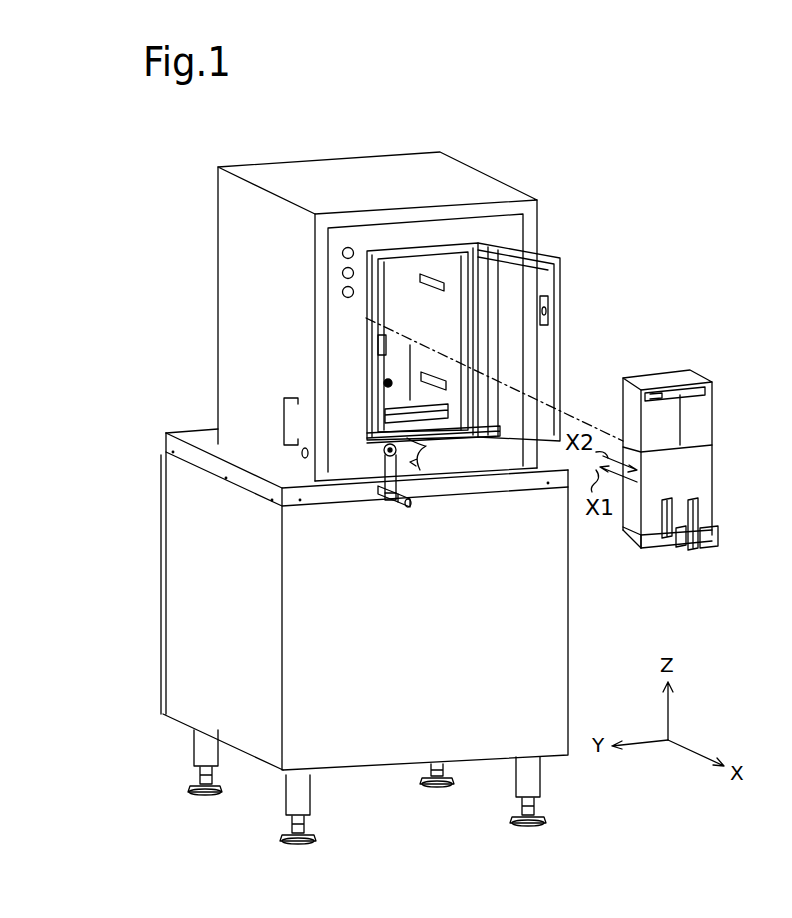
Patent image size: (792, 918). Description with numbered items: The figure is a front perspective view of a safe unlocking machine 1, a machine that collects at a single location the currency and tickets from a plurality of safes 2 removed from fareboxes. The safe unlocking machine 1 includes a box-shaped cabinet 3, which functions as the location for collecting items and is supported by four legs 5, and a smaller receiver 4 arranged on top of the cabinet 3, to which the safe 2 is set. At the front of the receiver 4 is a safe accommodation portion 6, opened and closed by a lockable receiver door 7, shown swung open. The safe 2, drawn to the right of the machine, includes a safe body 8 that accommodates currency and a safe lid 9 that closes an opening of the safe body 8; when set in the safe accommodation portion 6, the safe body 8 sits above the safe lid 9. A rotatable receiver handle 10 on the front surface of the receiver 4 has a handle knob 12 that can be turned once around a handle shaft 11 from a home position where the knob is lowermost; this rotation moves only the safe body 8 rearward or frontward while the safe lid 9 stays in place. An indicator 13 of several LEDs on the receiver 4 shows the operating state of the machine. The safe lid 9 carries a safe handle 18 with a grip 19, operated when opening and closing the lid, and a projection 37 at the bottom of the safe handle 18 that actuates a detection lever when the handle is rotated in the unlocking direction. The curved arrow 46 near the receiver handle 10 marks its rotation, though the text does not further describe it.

The safe unlocking machine 1 is at (207, 123).
The safe 2 is at (645, 374).
The cabinet 3 is at (161, 443).
The receiver 4 is at (218, 202).
The legs 5 is at (193, 744).
The safe accommodation portion 6 is at (404, 270).
The receiver door 7 is at (562, 272).
The safe body 8 is at (676, 380).
The safe lid 9 is at (718, 537).
The receiver handle 10 is at (378, 494).
The handle shaft 11 is at (382, 455).
The handle knob 12 is at (396, 502).
The indicator 13 is at (331, 278).
The safe handle 18 is at (683, 551).
The grip 19 is at (703, 545).
The projection 37 is at (669, 548).
The rotation direction 46 is at (405, 435).